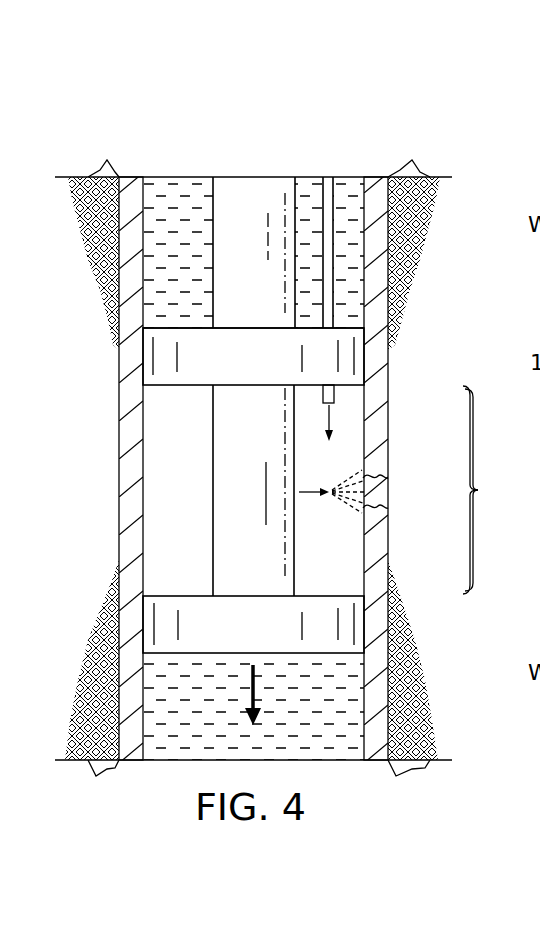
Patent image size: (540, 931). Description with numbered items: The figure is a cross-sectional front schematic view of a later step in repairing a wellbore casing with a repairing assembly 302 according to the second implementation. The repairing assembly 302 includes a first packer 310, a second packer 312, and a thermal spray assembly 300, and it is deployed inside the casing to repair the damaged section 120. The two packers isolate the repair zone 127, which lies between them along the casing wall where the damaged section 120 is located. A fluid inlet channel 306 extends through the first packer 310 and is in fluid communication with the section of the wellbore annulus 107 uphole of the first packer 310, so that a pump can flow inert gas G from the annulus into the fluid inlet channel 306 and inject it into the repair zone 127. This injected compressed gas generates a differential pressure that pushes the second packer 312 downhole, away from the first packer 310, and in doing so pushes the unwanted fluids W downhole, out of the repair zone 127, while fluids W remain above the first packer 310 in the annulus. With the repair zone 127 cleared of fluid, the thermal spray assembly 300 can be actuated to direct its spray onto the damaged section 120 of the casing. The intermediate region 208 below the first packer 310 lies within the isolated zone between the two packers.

The repairing assembly 302 is at (166, 146).
The fluid inlet channel 306 is at (318, 184).
The first packer 310 is at (256, 326).
The wellbore annulus 107 is at (157, 452).
The thermal spray assembly 300 is at (305, 466).
The annulus region 208 is at (213, 492).
The second packer 312 is at (263, 595).
The damaged section 120 is at (375, 505).
The repair zone 127 is at (495, 490).
The unwanted fluids W is at (158, 273).
The gas G is at (349, 404).